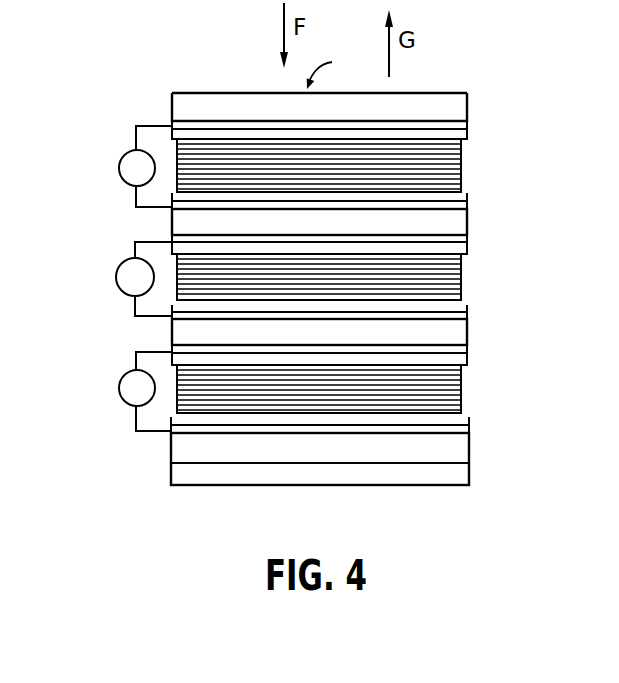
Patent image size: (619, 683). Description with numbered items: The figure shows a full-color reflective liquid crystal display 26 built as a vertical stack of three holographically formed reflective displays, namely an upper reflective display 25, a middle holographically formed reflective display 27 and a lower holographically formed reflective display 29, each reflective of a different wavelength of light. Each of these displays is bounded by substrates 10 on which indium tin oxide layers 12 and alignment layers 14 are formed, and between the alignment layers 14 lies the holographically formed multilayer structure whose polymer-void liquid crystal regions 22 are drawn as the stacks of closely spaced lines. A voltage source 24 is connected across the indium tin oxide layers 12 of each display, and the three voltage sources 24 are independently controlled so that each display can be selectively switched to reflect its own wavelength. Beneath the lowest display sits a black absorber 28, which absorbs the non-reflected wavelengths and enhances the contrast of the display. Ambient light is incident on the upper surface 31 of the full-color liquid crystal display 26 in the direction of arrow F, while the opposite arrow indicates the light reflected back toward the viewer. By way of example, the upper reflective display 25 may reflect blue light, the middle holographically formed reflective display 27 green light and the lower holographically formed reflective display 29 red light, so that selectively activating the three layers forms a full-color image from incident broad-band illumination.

The substrate 10 is at (231, 105).
The indium tin oxide layer 12 is at (172, 123).
The alignment layer 14 is at (465, 140).
The liquid crystal region 22 is at (460, 163).
The voltage source 24 is at (121, 160).
The upper reflective display 25 is at (467, 103).
The full-color liquid crystal display 26 is at (333, 70).
The middle holographically formed reflective display 27 is at (467, 227).
The black absorber 28 is at (463, 477).
The lower holographically formed reflective display 29 is at (467, 337).
The upper surface 31 is at (425, 93).